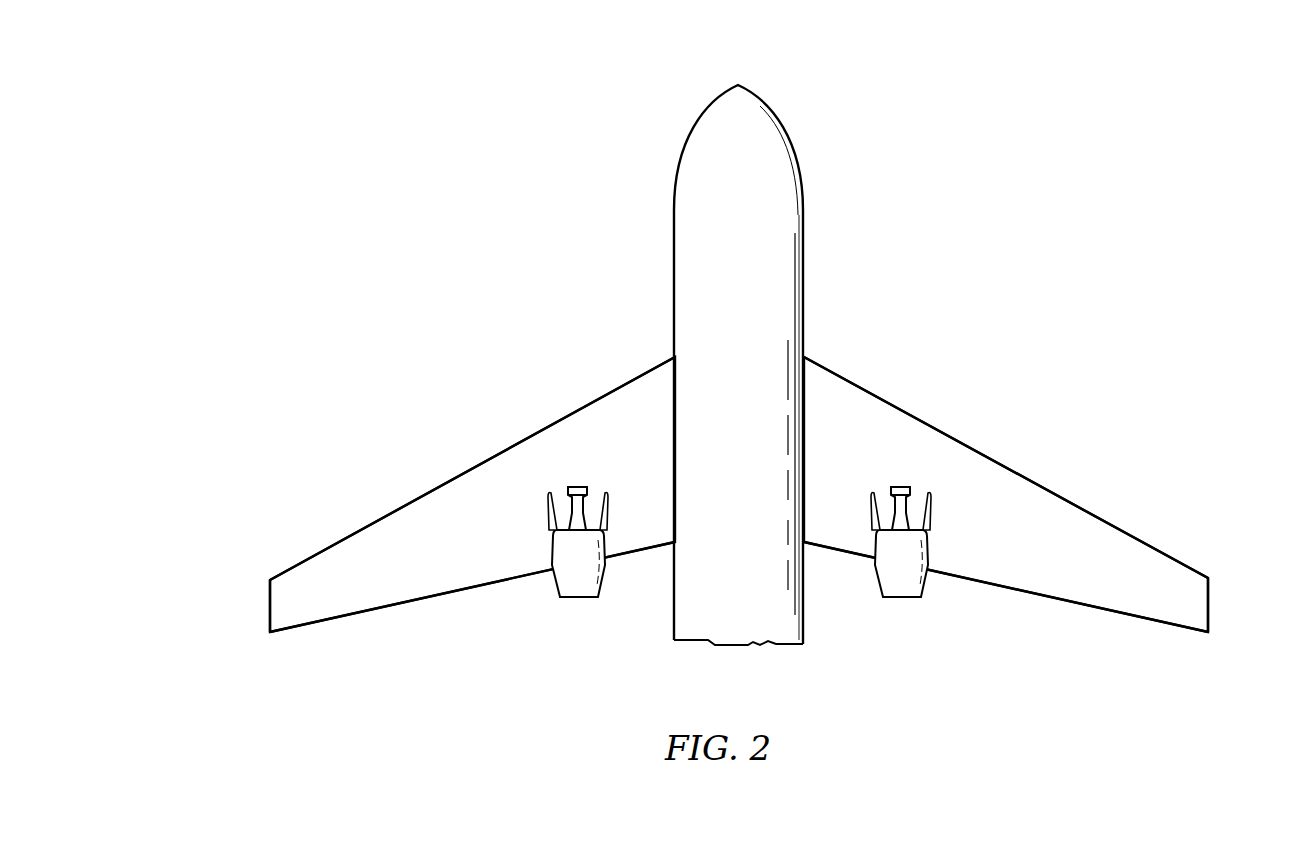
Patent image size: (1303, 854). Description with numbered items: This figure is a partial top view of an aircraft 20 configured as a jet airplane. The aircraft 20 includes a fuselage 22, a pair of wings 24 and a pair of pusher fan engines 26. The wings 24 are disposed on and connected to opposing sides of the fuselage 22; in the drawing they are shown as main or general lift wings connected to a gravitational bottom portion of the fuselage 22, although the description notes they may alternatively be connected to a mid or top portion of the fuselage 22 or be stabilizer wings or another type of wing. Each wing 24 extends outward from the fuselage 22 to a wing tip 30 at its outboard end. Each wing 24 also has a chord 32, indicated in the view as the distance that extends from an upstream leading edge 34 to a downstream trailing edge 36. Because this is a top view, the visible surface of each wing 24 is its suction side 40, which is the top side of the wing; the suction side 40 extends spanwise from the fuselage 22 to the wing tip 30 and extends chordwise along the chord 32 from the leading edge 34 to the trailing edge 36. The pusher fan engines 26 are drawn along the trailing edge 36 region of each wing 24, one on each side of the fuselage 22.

The aircraft 20 is at (1154, 160).
The fuselage 22 is at (781, 110).
The wing 24 is at (415, 482).
The pusher fan engine 26 is at (553, 600).
The wing tip 30 is at (270, 606).
The chord 32 is at (511, 451).
The leading edge 34 is at (481, 462).
The trailing edge 36 is at (437, 598).
The suction side 40 is at (347, 555).